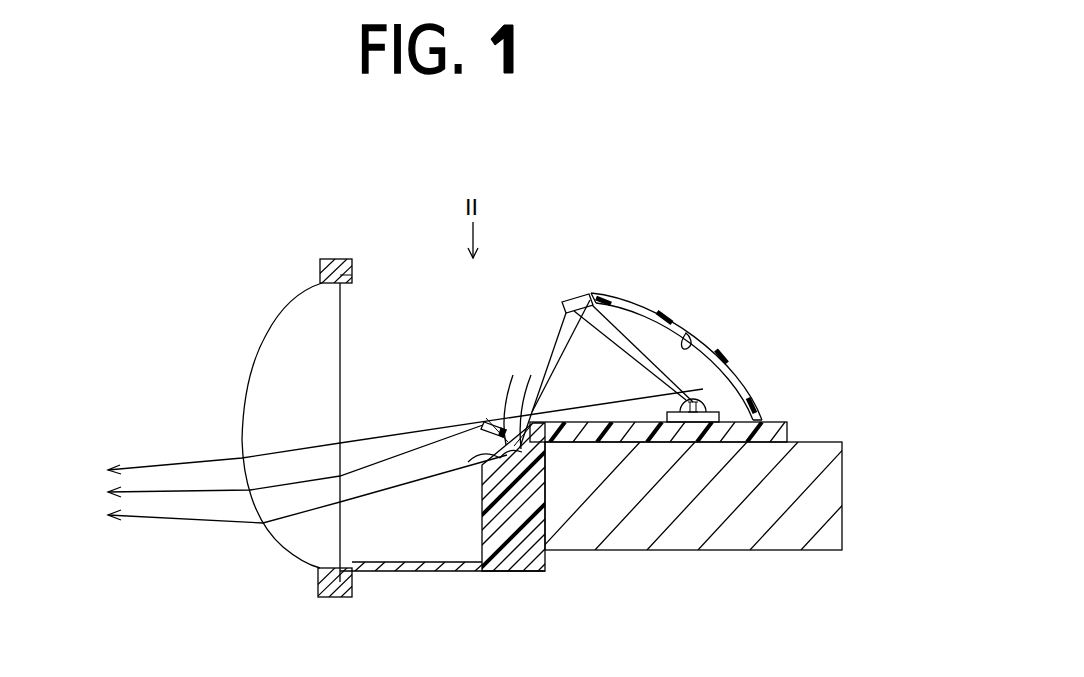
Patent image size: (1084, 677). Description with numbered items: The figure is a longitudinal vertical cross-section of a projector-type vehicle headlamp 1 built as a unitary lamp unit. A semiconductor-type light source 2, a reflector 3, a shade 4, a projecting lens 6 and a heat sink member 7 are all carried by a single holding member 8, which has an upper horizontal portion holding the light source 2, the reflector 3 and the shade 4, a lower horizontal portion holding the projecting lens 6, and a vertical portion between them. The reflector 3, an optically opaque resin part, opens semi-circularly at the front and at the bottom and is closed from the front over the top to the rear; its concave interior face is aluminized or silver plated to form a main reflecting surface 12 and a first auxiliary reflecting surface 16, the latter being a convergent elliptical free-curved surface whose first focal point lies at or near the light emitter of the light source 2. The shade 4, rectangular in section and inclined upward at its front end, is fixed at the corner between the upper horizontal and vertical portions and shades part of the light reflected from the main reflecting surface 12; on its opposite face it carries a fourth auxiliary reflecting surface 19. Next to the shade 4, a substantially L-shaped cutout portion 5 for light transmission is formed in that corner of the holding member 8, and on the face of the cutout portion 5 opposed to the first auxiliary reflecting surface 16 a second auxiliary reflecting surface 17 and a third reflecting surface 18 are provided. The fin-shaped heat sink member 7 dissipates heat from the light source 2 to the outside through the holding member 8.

The vehicle headlamp 1 is at (328, 222).
The semiconductor-type light source 2 is at (713, 403).
The reflector 3 is at (633, 293).
The shade 4 is at (478, 413).
The cutout portion 5 is at (505, 443).
The projecting lens 6 is at (266, 330).
The heat sink member 7 is at (687, 552).
The holding member 8 is at (513, 540).
The main reflecting surface 12 is at (686, 333).
The first auxiliary reflecting surface 16 is at (577, 301).
The second auxiliary reflecting surface 17 is at (520, 430).
The third reflecting surface 18 is at (467, 462).
The fourth auxiliary reflecting surface 19 is at (483, 425).